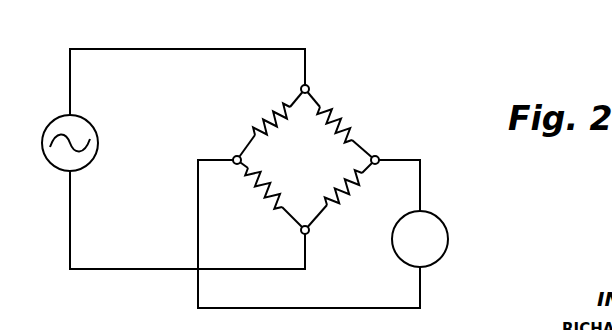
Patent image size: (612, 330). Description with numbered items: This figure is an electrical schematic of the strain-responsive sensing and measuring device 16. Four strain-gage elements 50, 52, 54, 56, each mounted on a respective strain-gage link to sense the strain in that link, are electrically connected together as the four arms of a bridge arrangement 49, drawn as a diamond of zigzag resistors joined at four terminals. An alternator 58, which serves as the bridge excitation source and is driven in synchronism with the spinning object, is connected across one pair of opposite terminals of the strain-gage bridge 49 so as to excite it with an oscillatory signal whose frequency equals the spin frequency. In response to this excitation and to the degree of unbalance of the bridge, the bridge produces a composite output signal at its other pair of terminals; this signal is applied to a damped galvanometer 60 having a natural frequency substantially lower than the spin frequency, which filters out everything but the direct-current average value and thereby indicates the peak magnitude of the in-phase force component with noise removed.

The strain-responsive sensing and measuring device 16 is at (378, 89).
The bridge arrangement 49 is at (370, 146).
The strain-gage element 50 is at (259, 129).
The strain-gage element 52 is at (332, 118).
The strain-gage element 54 is at (264, 197).
The strain-gage element 56 is at (339, 204).
The alternator 58 is at (88, 130).
The damped galvanometer 60 is at (400, 236).